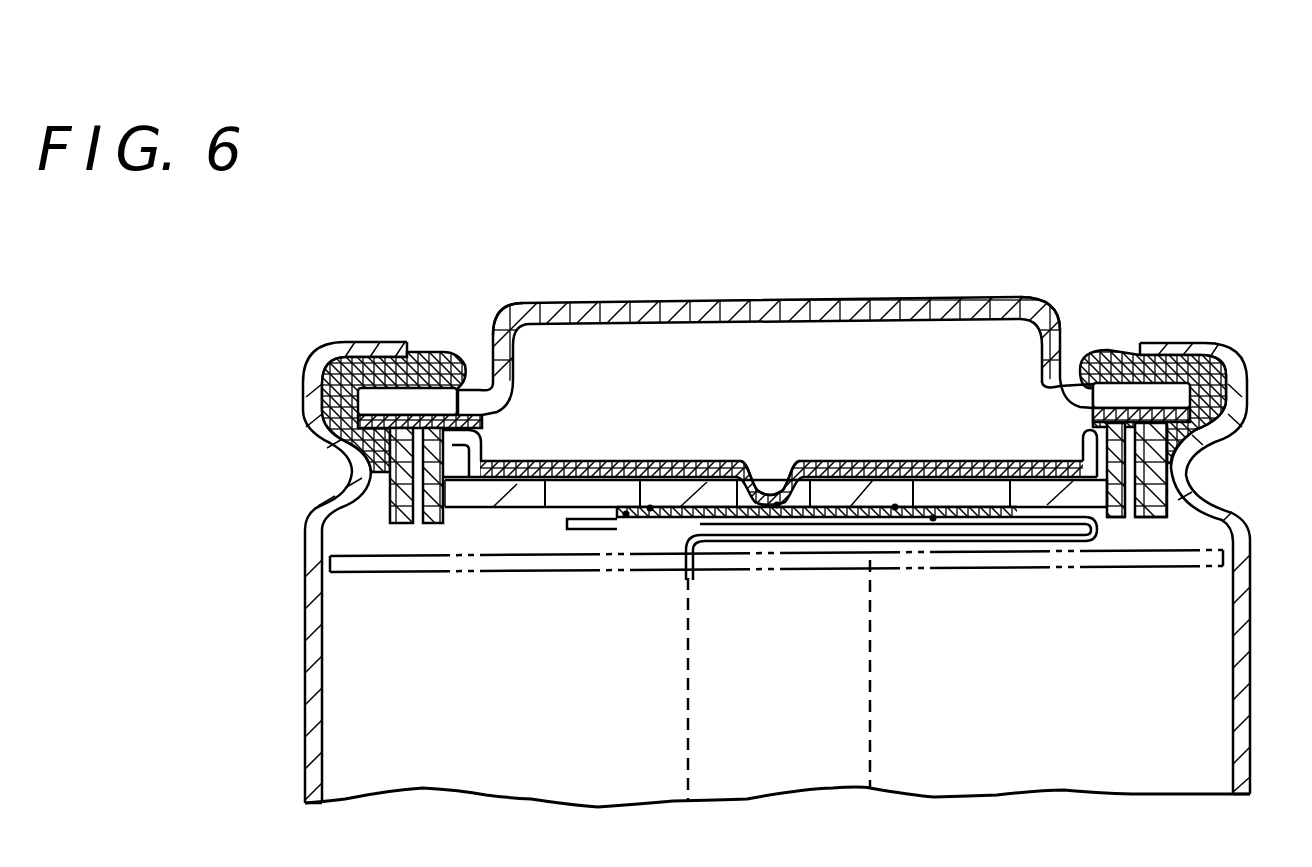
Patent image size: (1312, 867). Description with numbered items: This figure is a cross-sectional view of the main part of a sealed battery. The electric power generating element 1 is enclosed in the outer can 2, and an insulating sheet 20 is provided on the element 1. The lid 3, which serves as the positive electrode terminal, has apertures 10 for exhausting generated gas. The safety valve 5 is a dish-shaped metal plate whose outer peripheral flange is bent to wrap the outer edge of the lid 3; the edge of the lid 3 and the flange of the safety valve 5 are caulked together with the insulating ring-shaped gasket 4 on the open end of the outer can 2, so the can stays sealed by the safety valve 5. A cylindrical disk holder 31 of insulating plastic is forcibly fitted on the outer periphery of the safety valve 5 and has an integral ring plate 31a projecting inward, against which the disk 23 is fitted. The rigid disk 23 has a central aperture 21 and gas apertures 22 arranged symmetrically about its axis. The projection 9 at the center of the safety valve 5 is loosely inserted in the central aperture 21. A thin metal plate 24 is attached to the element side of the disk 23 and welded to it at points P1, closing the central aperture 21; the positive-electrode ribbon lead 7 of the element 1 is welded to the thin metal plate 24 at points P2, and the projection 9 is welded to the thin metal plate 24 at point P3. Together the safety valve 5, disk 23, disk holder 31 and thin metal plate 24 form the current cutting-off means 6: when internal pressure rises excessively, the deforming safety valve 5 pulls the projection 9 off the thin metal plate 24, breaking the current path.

The electric power generating element 1 is at (1220, 597).
The outer can 2 is at (1242, 717).
The lid 3 is at (918, 310).
The insulating ring-shaped gasket 4 is at (1213, 400).
The safety valve 5 is at (900, 470).
The current cutting-off means 6 is at (781, 453).
The ribbon lead 7 is at (1090, 514).
The projection 9 is at (808, 507).
The apertures 10 is at (512, 320).
The insulating sheet 20 is at (380, 567).
The central aperture 21 is at (753, 507).
The gas apertures 22 is at (583, 493).
The disk 23 is at (527, 500).
The thin metal plate 24 is at (650, 527).
The disk holder 31 is at (1117, 493).
The ring plate 31a is at (1105, 489).
The points P1 is at (650, 508).
The points P2 is at (626, 514).
The point P3 is at (777, 506).